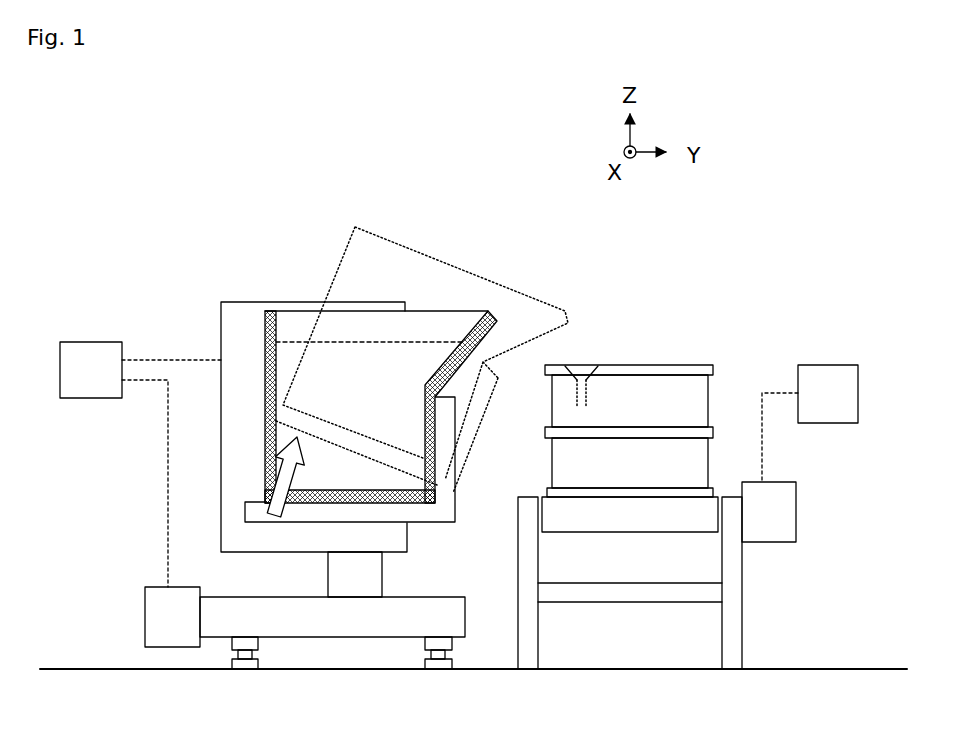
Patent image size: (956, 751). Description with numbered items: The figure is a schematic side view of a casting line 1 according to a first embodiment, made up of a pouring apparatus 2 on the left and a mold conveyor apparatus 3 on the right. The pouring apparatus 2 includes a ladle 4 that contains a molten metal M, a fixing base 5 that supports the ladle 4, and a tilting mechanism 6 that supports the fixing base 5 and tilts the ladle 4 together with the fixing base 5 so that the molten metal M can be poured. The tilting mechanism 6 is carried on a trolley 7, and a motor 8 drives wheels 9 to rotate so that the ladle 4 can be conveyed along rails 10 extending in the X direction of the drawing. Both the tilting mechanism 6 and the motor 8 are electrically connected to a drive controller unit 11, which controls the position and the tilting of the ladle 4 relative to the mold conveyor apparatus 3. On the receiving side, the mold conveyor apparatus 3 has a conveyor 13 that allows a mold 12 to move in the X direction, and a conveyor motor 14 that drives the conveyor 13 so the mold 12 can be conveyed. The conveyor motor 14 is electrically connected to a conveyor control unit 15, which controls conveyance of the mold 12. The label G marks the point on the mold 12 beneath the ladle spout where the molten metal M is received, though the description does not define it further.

The casting line 1 is at (93, 124).
The pouring apparatus 2 is at (200, 201).
The mold conveyor apparatus 3 is at (818, 196).
The ladle 4 is at (430, 312).
The fixing base 5 is at (255, 508).
The tilting mechanism 6 is at (236, 302).
The trolley 7 is at (283, 607).
The motor 8 is at (160, 617).
The wheels 9 is at (255, 658).
The rails 10 is at (248, 673).
The drive controller unit 11 is at (82, 352).
The mold 12 is at (643, 383).
The conveyor 13 is at (672, 520).
The conveyor motor 14 is at (780, 508).
The conveyor control unit 15 is at (822, 373).
The molten metal M is at (337, 355).
The gate G is at (588, 372).